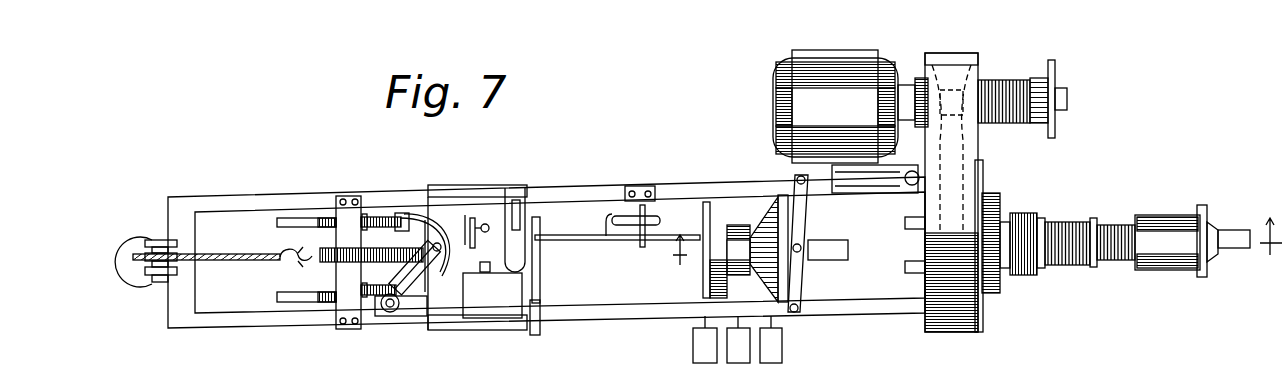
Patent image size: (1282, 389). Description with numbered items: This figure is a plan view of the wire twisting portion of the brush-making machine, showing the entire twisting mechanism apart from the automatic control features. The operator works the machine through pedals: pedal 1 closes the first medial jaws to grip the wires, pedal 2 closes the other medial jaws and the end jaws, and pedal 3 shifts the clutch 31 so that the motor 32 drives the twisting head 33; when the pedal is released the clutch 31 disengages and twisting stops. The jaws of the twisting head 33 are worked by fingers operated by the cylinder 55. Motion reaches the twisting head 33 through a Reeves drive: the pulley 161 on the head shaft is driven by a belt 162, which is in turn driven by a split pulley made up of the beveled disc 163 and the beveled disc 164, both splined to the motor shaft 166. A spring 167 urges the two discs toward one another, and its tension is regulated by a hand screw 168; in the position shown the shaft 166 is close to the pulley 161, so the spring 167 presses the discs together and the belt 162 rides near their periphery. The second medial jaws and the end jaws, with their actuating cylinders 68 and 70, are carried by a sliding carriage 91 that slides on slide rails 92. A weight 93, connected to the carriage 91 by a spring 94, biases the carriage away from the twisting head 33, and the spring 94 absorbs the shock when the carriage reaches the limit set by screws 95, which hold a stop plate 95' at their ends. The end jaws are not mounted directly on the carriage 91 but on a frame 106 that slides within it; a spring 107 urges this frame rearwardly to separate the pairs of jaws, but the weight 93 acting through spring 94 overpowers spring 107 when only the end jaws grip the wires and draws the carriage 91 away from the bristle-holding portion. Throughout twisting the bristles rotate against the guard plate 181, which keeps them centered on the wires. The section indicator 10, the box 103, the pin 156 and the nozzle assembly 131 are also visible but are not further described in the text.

The pedal 1 is at (775, 360).
The pedal 2 is at (740, 358).
The pedal 3 is at (702, 358).
The section line 10 is at (965, 234).
The clutch 31 is at (1003, 285).
The motor 32 is at (792, 105).
The twisting head 33 is at (762, 205).
The cylinder 55 is at (868, 185).
The actuating cylinder 68 is at (545, 283).
The actuating cylinder 70 is at (405, 270).
The sliding carriage 91 is at (512, 187).
The slide rails 92 is at (265, 178).
The weight 93 is at (128, 240).
The spring 94 is at (325, 252).
The screws 95 is at (377, 256).
The stop plate 95' is at (418, 328).
The box 103 is at (492, 295).
The frame 106 is at (443, 250).
The spring 107 is at (410, 214).
The nozzle assembly 131 is at (1115, 222).
The pin 156 is at (470, 218).
The pulley 161 is at (982, 184).
The belt 162 is at (960, 165).
The beveled disc 163 is at (935, 42).
The beveled disc 164 is at (985, 75).
The motor shaft 166 is at (1067, 99).
The spring 167 is at (1017, 77).
The hand screw 168 is at (1055, 73).
The guard plate 181 is at (603, 240).